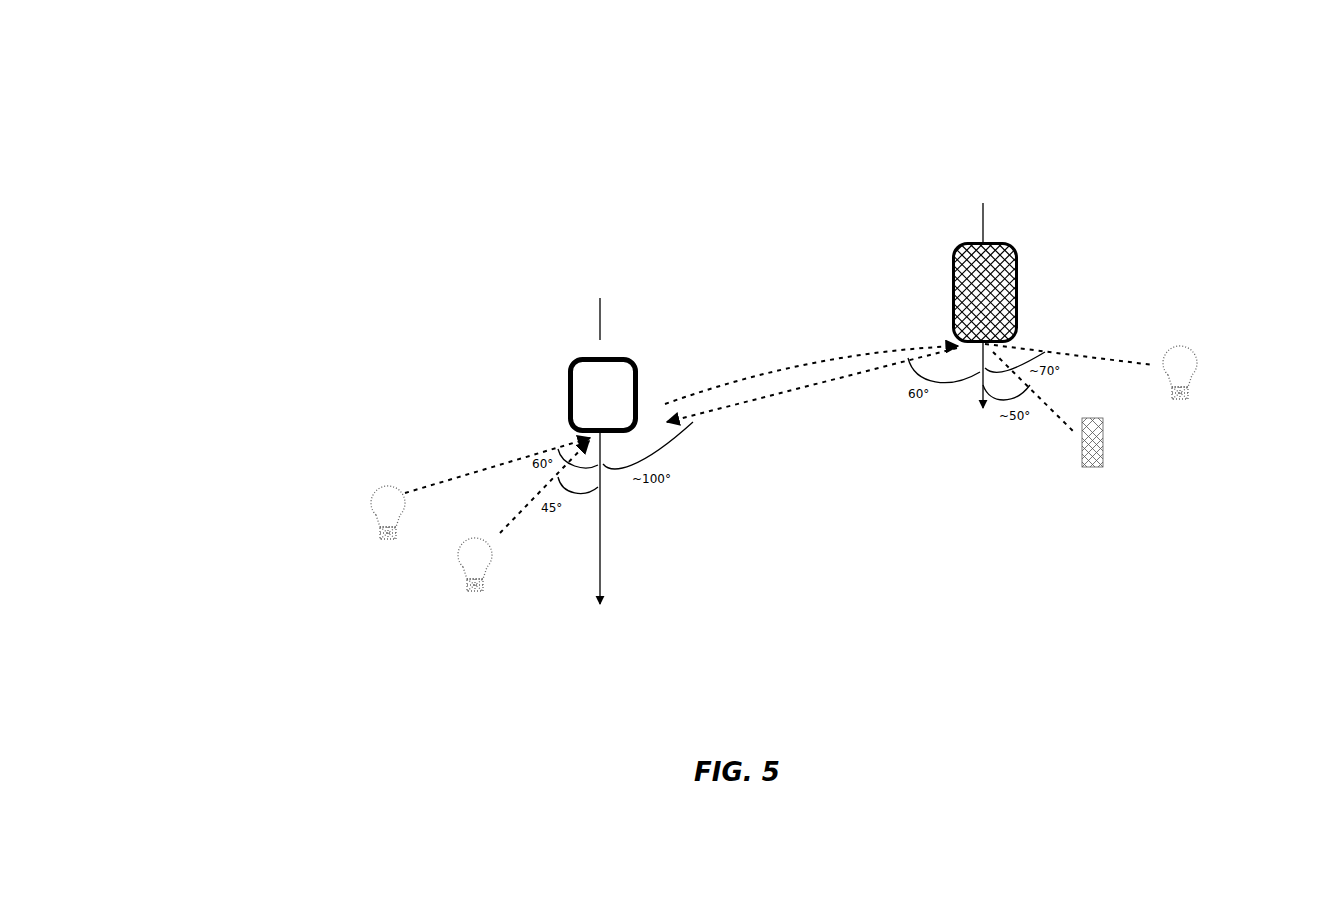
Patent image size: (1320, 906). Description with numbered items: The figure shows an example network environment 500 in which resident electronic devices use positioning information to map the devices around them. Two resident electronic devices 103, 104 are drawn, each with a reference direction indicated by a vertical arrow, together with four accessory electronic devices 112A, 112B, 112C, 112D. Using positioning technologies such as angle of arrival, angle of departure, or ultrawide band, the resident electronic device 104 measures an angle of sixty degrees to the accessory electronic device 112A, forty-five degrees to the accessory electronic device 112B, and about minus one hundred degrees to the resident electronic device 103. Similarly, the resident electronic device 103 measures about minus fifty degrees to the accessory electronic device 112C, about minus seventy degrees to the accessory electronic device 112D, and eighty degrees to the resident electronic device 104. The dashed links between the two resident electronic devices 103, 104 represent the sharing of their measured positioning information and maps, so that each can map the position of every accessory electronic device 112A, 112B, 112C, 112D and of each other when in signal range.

The network environment 500 is at (182, 106).
The resident electronic device 103 is at (997, 243).
The resident electronic device 104 is at (569, 377).
The accessory electronic device 112A is at (372, 508).
The accessory electronic device 112B is at (492, 548).
The accessory electronic device 112C is at (1103, 445).
The accessory electronic device 112D is at (1200, 360).